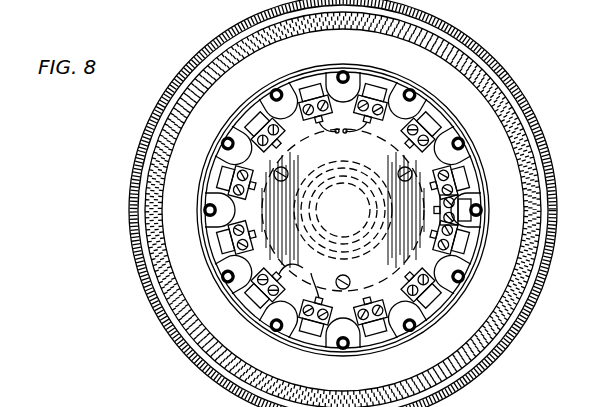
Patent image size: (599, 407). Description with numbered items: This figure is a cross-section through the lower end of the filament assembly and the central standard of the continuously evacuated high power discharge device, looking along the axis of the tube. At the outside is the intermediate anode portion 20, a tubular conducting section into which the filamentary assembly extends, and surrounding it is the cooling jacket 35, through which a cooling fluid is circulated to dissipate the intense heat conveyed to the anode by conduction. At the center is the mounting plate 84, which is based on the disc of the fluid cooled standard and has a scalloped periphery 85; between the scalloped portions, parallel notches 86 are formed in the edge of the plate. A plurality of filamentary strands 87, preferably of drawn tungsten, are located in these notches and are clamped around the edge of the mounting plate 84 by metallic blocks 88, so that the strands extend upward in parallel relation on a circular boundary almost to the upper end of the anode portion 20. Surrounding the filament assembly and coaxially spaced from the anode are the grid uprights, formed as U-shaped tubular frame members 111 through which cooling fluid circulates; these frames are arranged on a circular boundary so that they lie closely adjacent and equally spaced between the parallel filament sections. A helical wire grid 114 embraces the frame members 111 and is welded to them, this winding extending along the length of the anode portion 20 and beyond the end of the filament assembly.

The anode portion 20 is at (518, 122).
The cooling jacket 35 is at (547, 140).
The mounting plate 84 is at (304, 94).
The scalloped periphery 85 is at (397, 87).
The parallel notches 86 is at (421, 128).
The filamentary strands 87 is at (318, 72).
The metallic blocks 88 is at (323, 210).
The U-shaped tubular frame members 111 is at (273, 88).
The helical wire grid 114 is at (438, 318).